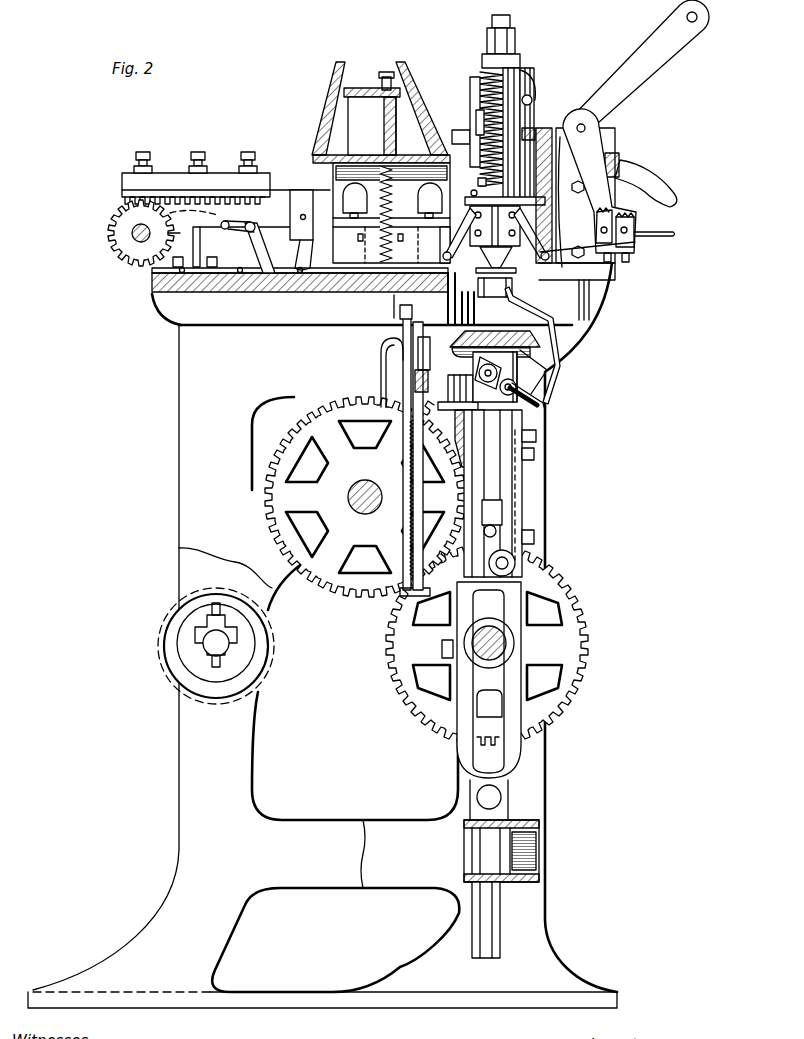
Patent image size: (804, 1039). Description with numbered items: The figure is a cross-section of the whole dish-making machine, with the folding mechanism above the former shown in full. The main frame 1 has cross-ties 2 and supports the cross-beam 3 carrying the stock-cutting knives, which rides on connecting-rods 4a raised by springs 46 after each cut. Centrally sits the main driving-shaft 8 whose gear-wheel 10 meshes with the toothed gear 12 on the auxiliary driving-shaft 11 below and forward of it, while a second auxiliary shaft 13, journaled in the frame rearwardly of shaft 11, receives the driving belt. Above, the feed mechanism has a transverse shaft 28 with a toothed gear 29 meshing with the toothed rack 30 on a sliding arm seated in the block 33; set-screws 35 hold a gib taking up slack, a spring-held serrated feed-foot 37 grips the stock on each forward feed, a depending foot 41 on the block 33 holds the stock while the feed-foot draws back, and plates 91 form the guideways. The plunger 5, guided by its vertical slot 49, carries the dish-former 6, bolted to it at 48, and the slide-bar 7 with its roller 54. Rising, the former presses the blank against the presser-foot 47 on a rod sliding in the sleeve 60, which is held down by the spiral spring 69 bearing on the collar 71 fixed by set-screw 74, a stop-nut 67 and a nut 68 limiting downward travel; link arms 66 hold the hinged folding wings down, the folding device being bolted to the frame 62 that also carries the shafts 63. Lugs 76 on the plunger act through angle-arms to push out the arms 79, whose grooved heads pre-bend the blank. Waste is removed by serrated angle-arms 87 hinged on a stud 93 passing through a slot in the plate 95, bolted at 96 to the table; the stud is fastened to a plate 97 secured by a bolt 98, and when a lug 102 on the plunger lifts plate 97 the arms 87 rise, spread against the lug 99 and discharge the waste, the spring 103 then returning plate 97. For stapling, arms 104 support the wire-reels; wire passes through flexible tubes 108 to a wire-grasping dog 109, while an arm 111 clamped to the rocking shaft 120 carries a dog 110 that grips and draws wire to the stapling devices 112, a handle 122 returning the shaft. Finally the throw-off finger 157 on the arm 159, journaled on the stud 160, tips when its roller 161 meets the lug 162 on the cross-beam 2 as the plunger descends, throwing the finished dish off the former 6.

The main frame 1 is at (322, 635).
The cross-ties 2 is at (536, 440).
The cross-beam 3 is at (336, 82).
The connecting-rods 4a is at (384, 119).
The plunger 5 is at (466, 590).
The dish-former 6 is at (545, 345).
The slide-bar 7 is at (522, 482).
The main driving-shaft 8 is at (370, 483).
The gear-wheel 10 is at (365, 497).
The auxiliary driving-shaft 11 is at (505, 646).
The toothed gear 12 is at (487, 645).
The second auxiliary shaft 13 is at (210, 645).
The transverse shaft 28 is at (135, 238).
The toothed gear 29 is at (115, 229).
The toothed rack 30 is at (122, 190).
The block 33 is at (255, 178).
The set-screws 35 is at (249, 152).
The feed-foot 37 is at (306, 292).
The depending foot 41 is at (262, 250).
The springs 46 is at (375, 236).
The presser-foot 47 is at (605, 279).
The bolt 48 is at (540, 350).
The vertical slot 49 is at (495, 766).
The roller 54 is at (520, 562).
The sleeve 60 is at (470, 112).
The frame 62 is at (592, 126).
The shafts 63 is at (533, 132).
The link arms 66 is at (447, 234).
The stop-nut 67 is at (512, 22).
The nut 68 is at (487, 40).
The spiral spring 69 is at (480, 92).
The collar 71 is at (478, 184).
The set-screw 74 is at (470, 204).
The lugs 76 is at (502, 508).
The arms 79 is at (512, 291).
The waste-removing angle-arms 87 is at (425, 341).
The plates 91 is at (152, 272).
The stud 93 is at (440, 400).
The plate 95 is at (403, 330).
The bolt 96 is at (400, 311).
The strap or plate 97 is at (405, 380).
The bolt 98 is at (424, 413).
The lug 99 is at (401, 353).
The lug 102 is at (442, 648).
The spring 103 is at (420, 492).
The upwardly-extending arms 104 is at (664, 47).
The flexible tubes 108 is at (676, 236).
The wire-grasping dog 109 is at (634, 250).
The dog 110 is at (600, 237).
The arm 111 is at (609, 183).
The stapling devices 112 is at (473, 103).
The shaft 120 is at (586, 128).
The lever or handle 122 is at (678, 196).
The throw-off finger 157 is at (590, 322).
The arm 159 is at (540, 408).
The stud 160 is at (520, 398).
The roller 161 is at (500, 376).
The lug 162 is at (545, 413).